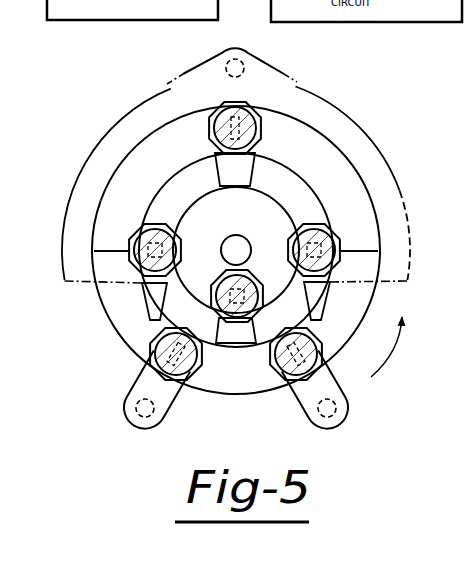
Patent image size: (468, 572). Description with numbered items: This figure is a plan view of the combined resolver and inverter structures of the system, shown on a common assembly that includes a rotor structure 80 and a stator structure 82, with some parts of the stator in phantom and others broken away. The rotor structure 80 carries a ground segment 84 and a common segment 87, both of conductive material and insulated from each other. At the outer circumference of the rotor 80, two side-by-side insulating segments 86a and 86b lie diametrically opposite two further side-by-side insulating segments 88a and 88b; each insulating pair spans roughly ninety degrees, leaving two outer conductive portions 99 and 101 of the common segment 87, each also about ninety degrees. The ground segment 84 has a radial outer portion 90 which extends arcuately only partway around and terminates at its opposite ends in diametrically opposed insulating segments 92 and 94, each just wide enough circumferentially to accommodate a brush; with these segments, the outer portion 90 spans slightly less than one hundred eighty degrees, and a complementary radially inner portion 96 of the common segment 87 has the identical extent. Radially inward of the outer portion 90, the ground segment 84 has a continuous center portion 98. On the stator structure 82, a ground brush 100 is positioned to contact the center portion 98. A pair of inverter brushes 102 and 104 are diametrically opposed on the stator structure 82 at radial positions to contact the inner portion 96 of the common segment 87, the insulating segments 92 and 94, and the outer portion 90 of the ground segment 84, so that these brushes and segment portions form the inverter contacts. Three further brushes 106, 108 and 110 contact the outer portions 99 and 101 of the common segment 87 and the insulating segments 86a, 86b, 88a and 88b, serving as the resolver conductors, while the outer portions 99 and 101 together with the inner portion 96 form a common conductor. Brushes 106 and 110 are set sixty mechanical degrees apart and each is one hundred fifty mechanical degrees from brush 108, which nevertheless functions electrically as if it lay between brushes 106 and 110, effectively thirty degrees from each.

The rotor structure 80 is at (123, 318).
The stator structure 82 is at (143, 380).
The ground segment 84 is at (292, 186).
The insulating segment 86a is at (74, 184).
The insulating segment 86b is at (128, 172).
The common segment 87 is at (152, 150).
The insulating segment 88a is at (355, 240).
The insulating segment 88b is at (346, 305).
The radial outer portion 90 is at (352, 195).
The insulating segment 92 is at (246, 170).
The insulating segment 94 is at (235, 332).
The radially inner portion 96 is at (194, 170).
The center portion 98 is at (268, 224).
The outer conductive portion 99 is at (163, 130).
The ground brush 100 is at (212, 305).
The outer conductive portion 101 is at (265, 378).
The inverter brush 102 is at (97, 288).
The inverter brush 104 is at (290, 270).
The brush 106 is at (190, 372).
The brush 108 is at (231, 103).
The brush 110 is at (344, 388).